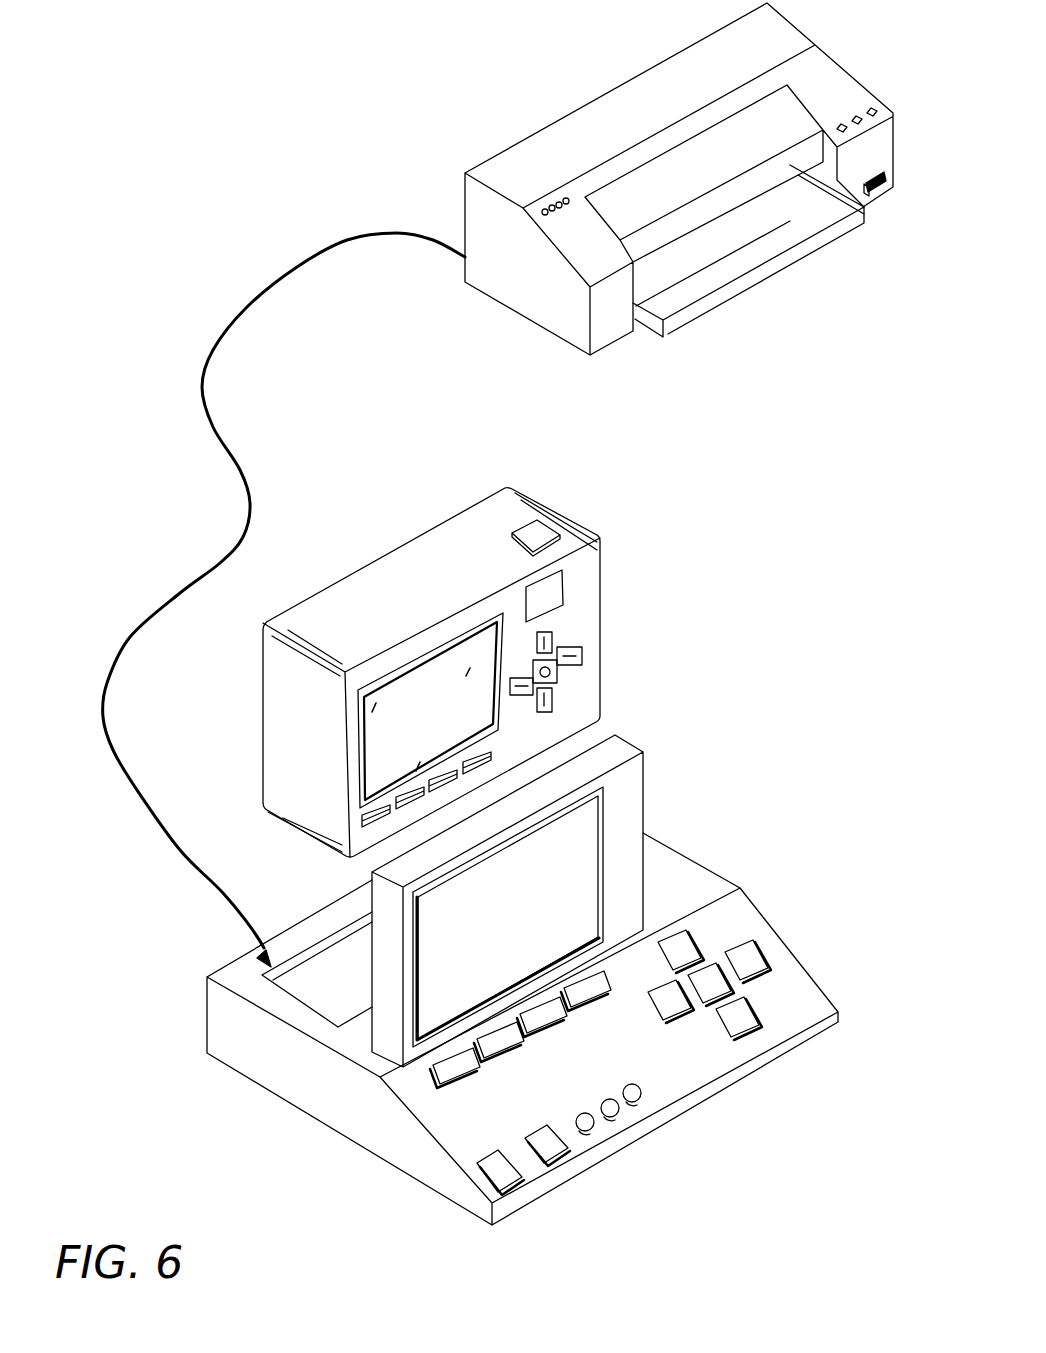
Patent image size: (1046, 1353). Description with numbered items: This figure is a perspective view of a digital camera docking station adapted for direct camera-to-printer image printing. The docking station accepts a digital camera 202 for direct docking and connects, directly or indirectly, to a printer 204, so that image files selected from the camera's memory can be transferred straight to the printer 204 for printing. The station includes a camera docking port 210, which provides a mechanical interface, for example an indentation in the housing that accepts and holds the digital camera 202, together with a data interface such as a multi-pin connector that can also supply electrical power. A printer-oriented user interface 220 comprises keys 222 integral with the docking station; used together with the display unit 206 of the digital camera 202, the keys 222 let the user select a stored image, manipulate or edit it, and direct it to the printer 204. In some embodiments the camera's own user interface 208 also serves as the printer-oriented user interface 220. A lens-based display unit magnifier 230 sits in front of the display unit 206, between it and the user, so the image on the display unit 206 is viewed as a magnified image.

The printer 204 is at (620, 95).
The digital camera 202 is at (448, 672).
The display unit 206 is at (378, 733).
The user interface 208 is at (577, 697).
The camera docking port 210 is at (253, 947).
The printer-oriented user interface 220 is at (486, 729).
The keys 222 is at (752, 960).
The display unit magnifier 230 is at (583, 848).